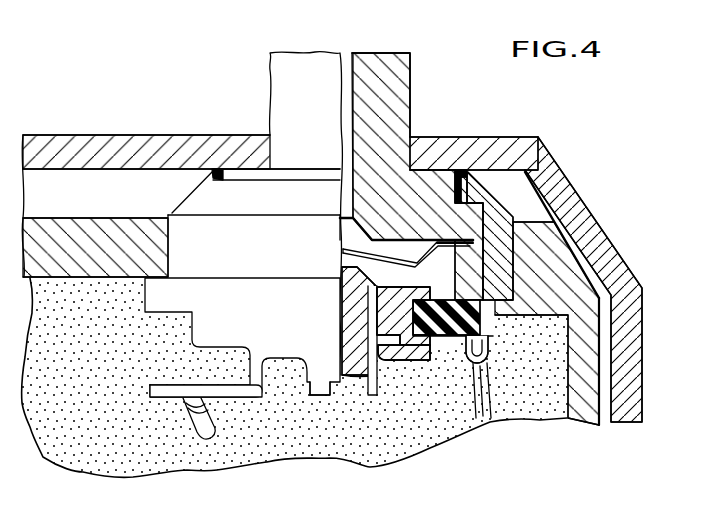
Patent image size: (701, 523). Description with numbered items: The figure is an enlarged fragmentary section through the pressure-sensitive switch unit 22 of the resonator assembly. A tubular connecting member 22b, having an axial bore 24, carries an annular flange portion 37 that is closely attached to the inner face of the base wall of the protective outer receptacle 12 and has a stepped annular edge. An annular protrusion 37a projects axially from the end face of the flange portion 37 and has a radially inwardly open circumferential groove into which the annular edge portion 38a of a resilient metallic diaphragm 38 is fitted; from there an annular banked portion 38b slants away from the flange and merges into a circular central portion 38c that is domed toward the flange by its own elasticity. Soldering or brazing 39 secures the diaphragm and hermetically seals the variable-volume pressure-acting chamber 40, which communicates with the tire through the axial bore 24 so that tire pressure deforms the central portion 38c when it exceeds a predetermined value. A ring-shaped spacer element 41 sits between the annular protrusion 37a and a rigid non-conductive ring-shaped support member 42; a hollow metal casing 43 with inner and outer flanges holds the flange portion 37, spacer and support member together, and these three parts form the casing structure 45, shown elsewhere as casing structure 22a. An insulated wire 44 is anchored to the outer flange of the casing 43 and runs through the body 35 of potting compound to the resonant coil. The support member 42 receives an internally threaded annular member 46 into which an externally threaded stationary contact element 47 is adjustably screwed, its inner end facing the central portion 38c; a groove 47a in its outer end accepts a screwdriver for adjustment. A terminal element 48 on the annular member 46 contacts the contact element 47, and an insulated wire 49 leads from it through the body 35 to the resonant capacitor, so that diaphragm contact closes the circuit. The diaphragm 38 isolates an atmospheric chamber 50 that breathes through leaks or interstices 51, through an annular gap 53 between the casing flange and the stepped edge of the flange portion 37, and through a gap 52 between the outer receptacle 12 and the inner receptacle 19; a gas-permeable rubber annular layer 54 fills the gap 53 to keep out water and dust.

The protective outer receptacle 12 is at (521, 138).
The inner receptacle 19 is at (600, 272).
The pressure-sensitive switch unit 22 is at (253, 128).
The casing structure 22a is at (172, 213).
The tubular connecting member 22b is at (404, 74).
The axial bore 24 is at (348, 62).
The body of potting compound 35 is at (290, 470).
The annular flange portion 37 is at (425, 172).
The annular protrusion 37a is at (492, 271).
The resilient metallic diaphragm 38 is at (420, 348).
The annular edge portion 38a is at (445, 246).
The annular banked portion 38b is at (489, 346).
The circular central portion 38c is at (343, 251).
The soldering or brazing 39 is at (410, 237).
The pressure-acting chamber 40 is at (346, 231).
The spacer element 41 is at (484, 308).
The support member 42 is at (445, 338).
The metal casing 43 is at (525, 178).
The insulated wire 44 is at (478, 416).
The casing structure 45 is at (133, 297).
The internally threaded annular member 46 is at (376, 318).
The stationary contact element 47 is at (372, 396).
The groove 47a is at (338, 396).
The terminal element 48 is at (247, 398).
The insulated wire 49 is at (188, 428).
The atmospheric chamber 50 is at (340, 293).
The leaks or interstices 51 is at (500, 225).
The gap 52 is at (603, 428).
The annular gap 53 is at (460, 172).
The annular layer 54 is at (211, 175).